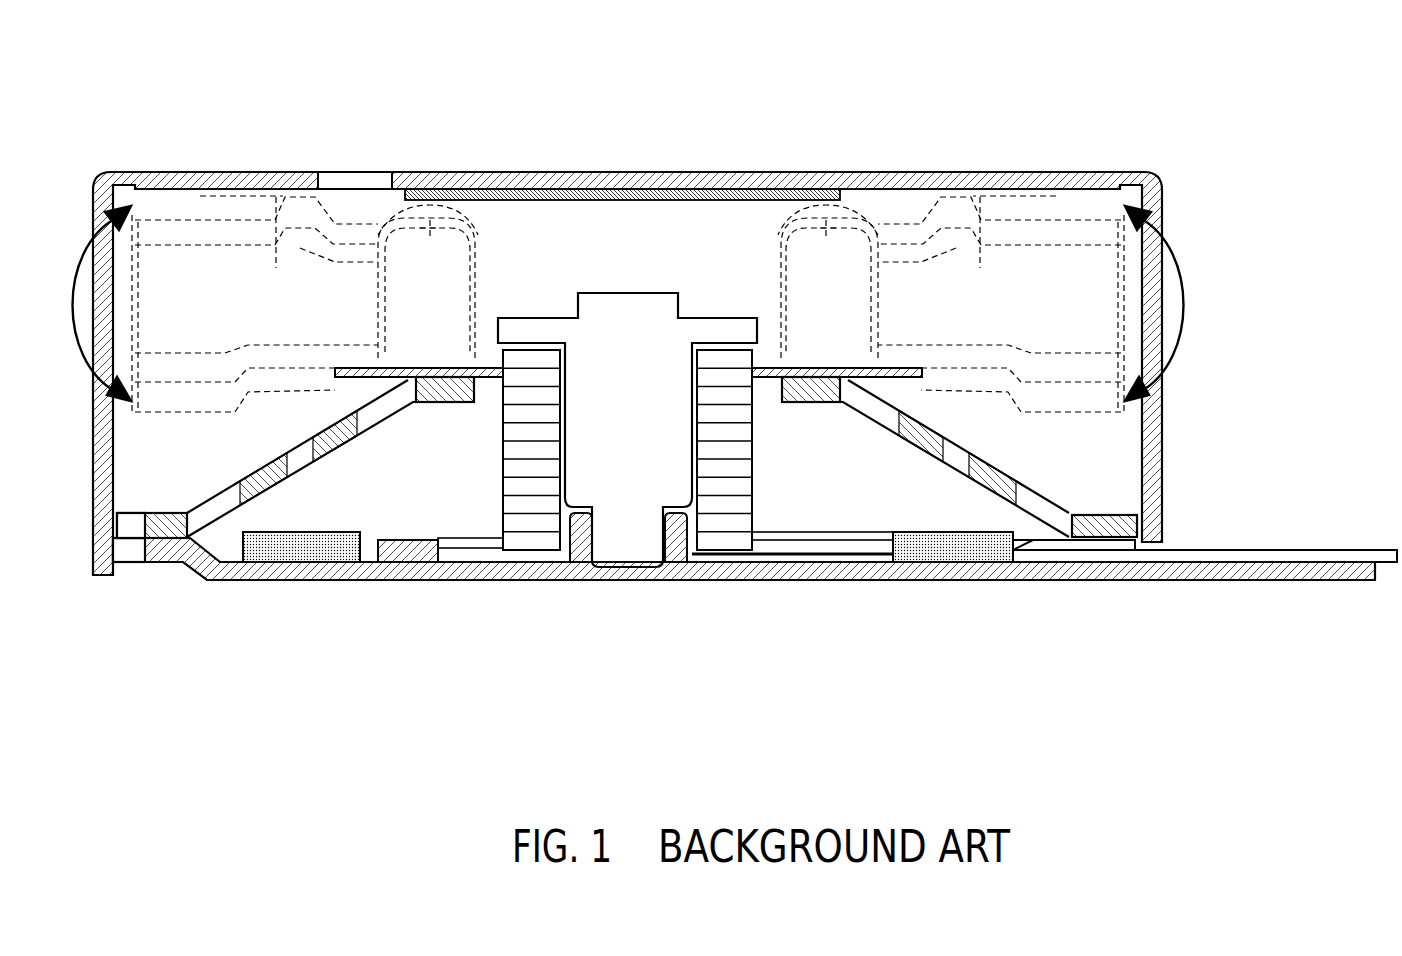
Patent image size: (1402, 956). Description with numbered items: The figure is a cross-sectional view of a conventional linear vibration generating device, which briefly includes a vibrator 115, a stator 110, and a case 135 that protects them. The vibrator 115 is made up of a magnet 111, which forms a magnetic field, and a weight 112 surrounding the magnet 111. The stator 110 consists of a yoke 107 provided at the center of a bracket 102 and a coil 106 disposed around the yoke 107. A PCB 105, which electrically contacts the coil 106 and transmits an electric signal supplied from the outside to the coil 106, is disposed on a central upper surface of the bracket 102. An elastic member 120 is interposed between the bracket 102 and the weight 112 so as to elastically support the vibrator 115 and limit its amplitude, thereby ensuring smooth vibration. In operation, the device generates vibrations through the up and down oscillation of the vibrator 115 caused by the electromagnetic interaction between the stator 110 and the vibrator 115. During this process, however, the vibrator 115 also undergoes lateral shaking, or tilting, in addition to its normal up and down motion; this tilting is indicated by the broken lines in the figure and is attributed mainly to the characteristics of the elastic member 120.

The bracket 102 is at (524, 522).
The PCB 105 is at (1270, 550).
The coil 106 is at (724, 516).
The yoke 107 is at (618, 520).
The stator 110 is at (631, 521).
The magnet 111 is at (430, 295).
The weight 112 is at (276, 262).
The vibrator 115 is at (486, 210).
The elastic member 120 is at (1043, 542).
The case 135 is at (1053, 180).